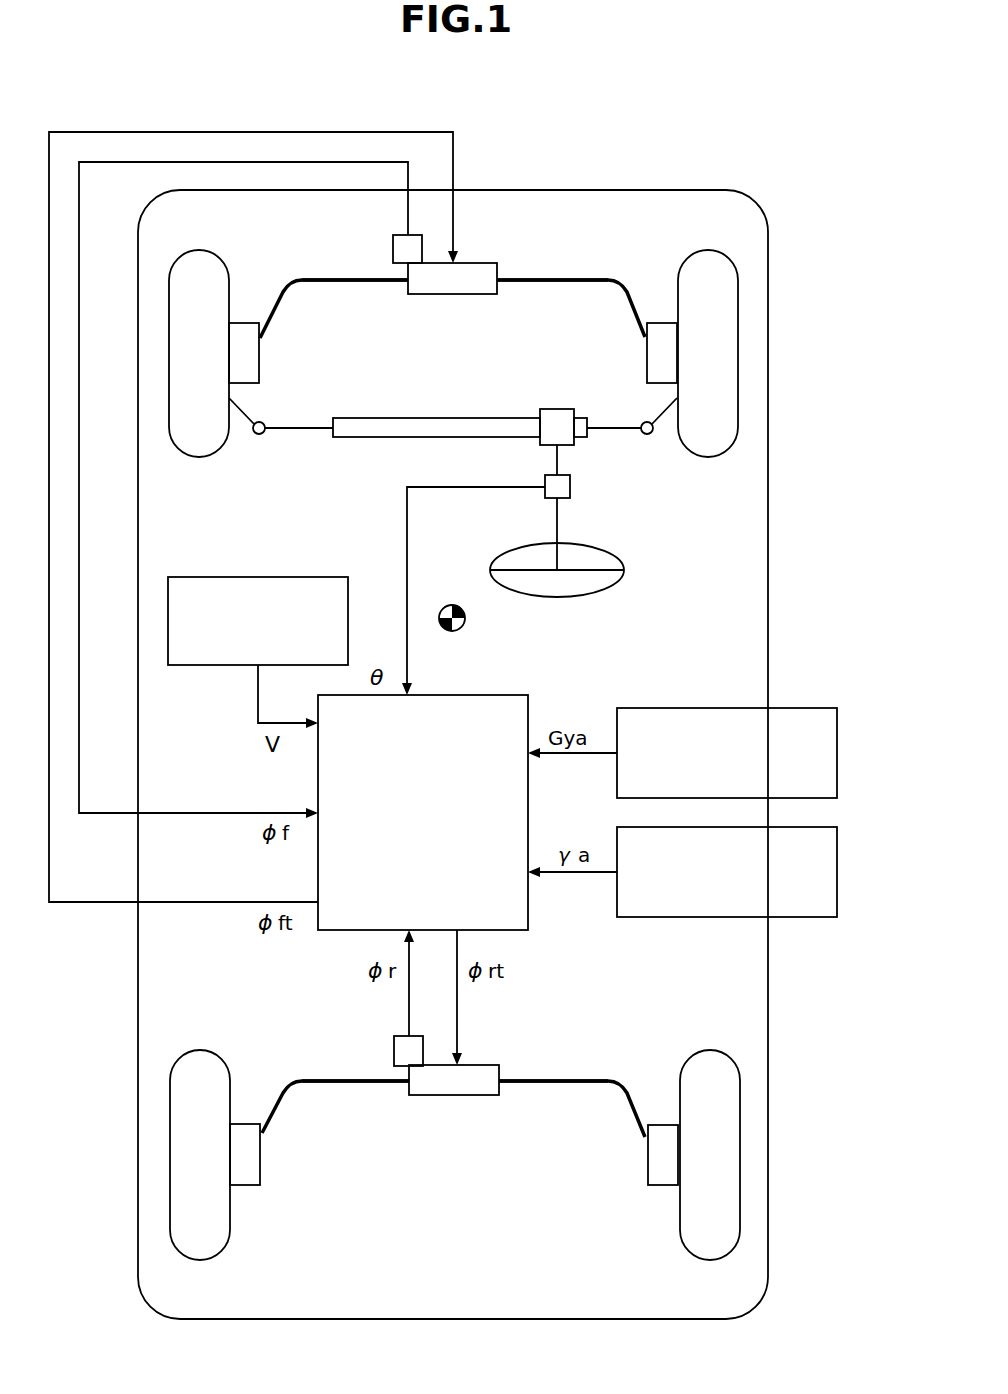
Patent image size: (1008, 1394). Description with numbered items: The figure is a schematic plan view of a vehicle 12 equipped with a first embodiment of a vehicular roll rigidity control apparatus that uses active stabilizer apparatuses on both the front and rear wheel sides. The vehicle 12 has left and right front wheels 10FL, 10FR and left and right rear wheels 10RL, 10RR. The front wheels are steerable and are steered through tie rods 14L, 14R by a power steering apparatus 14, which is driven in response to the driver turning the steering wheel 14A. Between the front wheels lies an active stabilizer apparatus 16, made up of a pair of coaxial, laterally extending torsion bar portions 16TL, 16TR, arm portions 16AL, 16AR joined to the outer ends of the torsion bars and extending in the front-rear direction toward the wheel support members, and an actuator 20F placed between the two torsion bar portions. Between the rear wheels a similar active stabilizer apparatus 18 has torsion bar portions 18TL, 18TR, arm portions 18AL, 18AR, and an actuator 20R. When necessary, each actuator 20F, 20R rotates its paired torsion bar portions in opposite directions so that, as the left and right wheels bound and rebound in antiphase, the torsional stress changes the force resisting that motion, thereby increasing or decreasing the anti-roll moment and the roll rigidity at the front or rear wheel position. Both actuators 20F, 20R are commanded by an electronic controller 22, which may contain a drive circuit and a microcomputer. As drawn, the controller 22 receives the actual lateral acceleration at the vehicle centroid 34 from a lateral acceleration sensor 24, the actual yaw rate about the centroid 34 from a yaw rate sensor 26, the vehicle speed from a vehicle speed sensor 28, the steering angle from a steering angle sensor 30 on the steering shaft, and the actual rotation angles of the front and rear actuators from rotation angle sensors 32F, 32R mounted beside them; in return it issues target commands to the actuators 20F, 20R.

The left front wheel 10FL is at (197, 457).
The right front wheel 10FR is at (706, 457).
The left rear wheel 10RL is at (170, 1158).
The right rear wheel 10RR is at (740, 1153).
The vehicle 12 is at (768, 605).
The power steering apparatus 14 is at (453, 505).
The steering wheel 14A is at (598, 589).
The left tie rod 14L is at (240, 413).
The right tie rod 14R is at (660, 410).
The front active stabilizer apparatus 16 is at (449, 281).
The left front arm portion 16AL is at (275, 303).
The right front arm portion 16AR is at (628, 303).
The left front torsion bar portion 16TL is at (352, 283).
The right front torsion bar portion 16TR is at (549, 283).
The rear active stabilizer apparatus 18 is at (449, 1090).
The left rear arm portion 18AL is at (275, 1104).
The right rear arm portion 18AR is at (630, 1104).
The left rear torsion bar portion 18TL is at (340, 1083).
The right rear torsion bar portion 18TR is at (553, 1083).
The front actuator 20F is at (455, 294).
The rear actuator 20R is at (447, 1095).
The electronic controller 22 is at (423, 812).
The lateral acceleration sensor 24 is at (837, 757).
The yaw rate sensor 26 is at (837, 875).
The vehicle speed sensor 28 is at (286, 577).
The steering angle sensor 30 is at (572, 486).
The front rotation angle sensor 32F is at (393, 252).
The rear rotation angle sensor 32R is at (394, 1050).
The centroid 34 is at (462, 628).